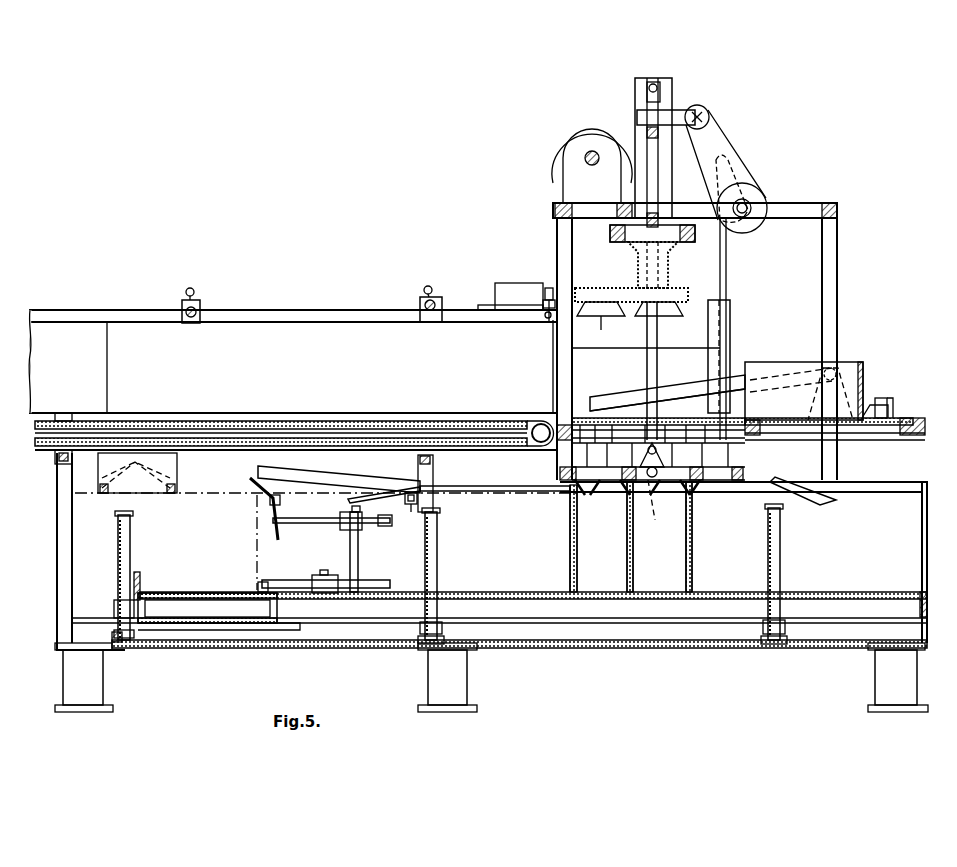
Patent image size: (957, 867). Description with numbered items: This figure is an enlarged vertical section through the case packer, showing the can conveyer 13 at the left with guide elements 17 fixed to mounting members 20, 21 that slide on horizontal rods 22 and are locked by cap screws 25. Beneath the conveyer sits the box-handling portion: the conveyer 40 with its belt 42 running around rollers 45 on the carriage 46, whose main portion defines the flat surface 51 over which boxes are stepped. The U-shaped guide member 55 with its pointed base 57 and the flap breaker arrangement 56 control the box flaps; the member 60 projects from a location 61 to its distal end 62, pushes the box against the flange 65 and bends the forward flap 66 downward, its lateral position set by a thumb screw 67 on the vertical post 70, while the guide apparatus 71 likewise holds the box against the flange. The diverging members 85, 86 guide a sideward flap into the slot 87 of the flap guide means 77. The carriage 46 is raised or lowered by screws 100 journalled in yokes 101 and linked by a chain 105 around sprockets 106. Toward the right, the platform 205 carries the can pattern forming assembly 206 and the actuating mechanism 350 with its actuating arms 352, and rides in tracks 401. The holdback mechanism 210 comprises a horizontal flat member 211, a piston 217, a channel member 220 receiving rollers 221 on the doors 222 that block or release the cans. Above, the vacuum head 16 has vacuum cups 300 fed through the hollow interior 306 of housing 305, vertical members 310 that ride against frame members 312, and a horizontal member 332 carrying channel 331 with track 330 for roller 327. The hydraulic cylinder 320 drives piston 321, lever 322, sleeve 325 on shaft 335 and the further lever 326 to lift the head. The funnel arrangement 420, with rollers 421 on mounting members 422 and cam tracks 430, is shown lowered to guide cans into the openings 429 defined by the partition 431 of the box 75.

The can conveyer 13 is at (383, 395).
The guide elements 17 is at (505, 363).
The vacuum head 16 is at (616, 276).
The mounting member 20 is at (430, 322).
The mounting member 21 is at (191, 323).
The horizontally extending rods 22 is at (188, 310).
The cap screws 25 is at (190, 288).
The conveyer 40 is at (168, 590).
The belt 42 is at (162, 592).
The rollers 45 is at (202, 598).
The carriage 46 is at (290, 632).
The flat surface 51 is at (488, 591).
The U-shaped guide member 55 is at (92, 470).
The flap breaker arrangement 56 is at (320, 533).
The pointed base 57 is at (177, 465).
The member 60 is at (270, 484).
The location 61 is at (280, 502).
The distal end 62 is at (253, 487).
The flange 65 is at (144, 575).
The forward flap 66 is at (270, 536).
The thumb screw 67 is at (372, 518).
The vertically extending post 70 is at (360, 558).
The guide apparatus 71 is at (305, 578).
The box 75 is at (570, 545).
The flap guide means 77 is at (480, 500).
The diverging member 85 is at (336, 480).
The diverging member 86 is at (348, 499).
The slot 87 is at (450, 485).
The screws 100 is at (123, 565).
The yoke 101 is at (118, 530).
The chain 105 is at (170, 654).
The sprockets 106 is at (123, 646).
The platform 205 is at (795, 428).
The can pattern forming assembly 206 is at (855, 358).
The holdback mechanism 210 is at (499, 328).
The horizontal flat member 211 is at (488, 305).
The piston 217 is at (543, 296).
The channel member 220 is at (552, 290).
The rollers 221 is at (548, 318).
The doors 222 is at (556, 362).
The vacuum cups 300 is at (626, 313).
The housing 305 is at (674, 300).
The hollow interior 306 is at (672, 306).
The vertical members 310 is at (653, 178).
The vertical members 312 is at (660, 368).
The hydraulic cylinder 320 is at (726, 322).
The piston 321 is at (726, 252).
The lever 322 is at (735, 185).
The sleeve 325 is at (750, 216).
The further lever 326 is at (718, 144).
The roller 327 is at (715, 102).
The track 330 is at (676, 112).
The channel 331 is at (662, 88).
The horizontal member 332 is at (635, 132).
The shaft 335 is at (748, 202).
The actuating mechanism 350 is at (880, 395).
The actuating arms 352 is at (891, 402).
The tracks 401 is at (680, 442).
The funnel arrangement 420 is at (779, 461).
The rollers 421 is at (657, 492).
The mounting members 422 is at (637, 470).
The openings 429 is at (638, 537).
The cam tracks 430 is at (626, 398).
The partition 431 is at (627, 571).